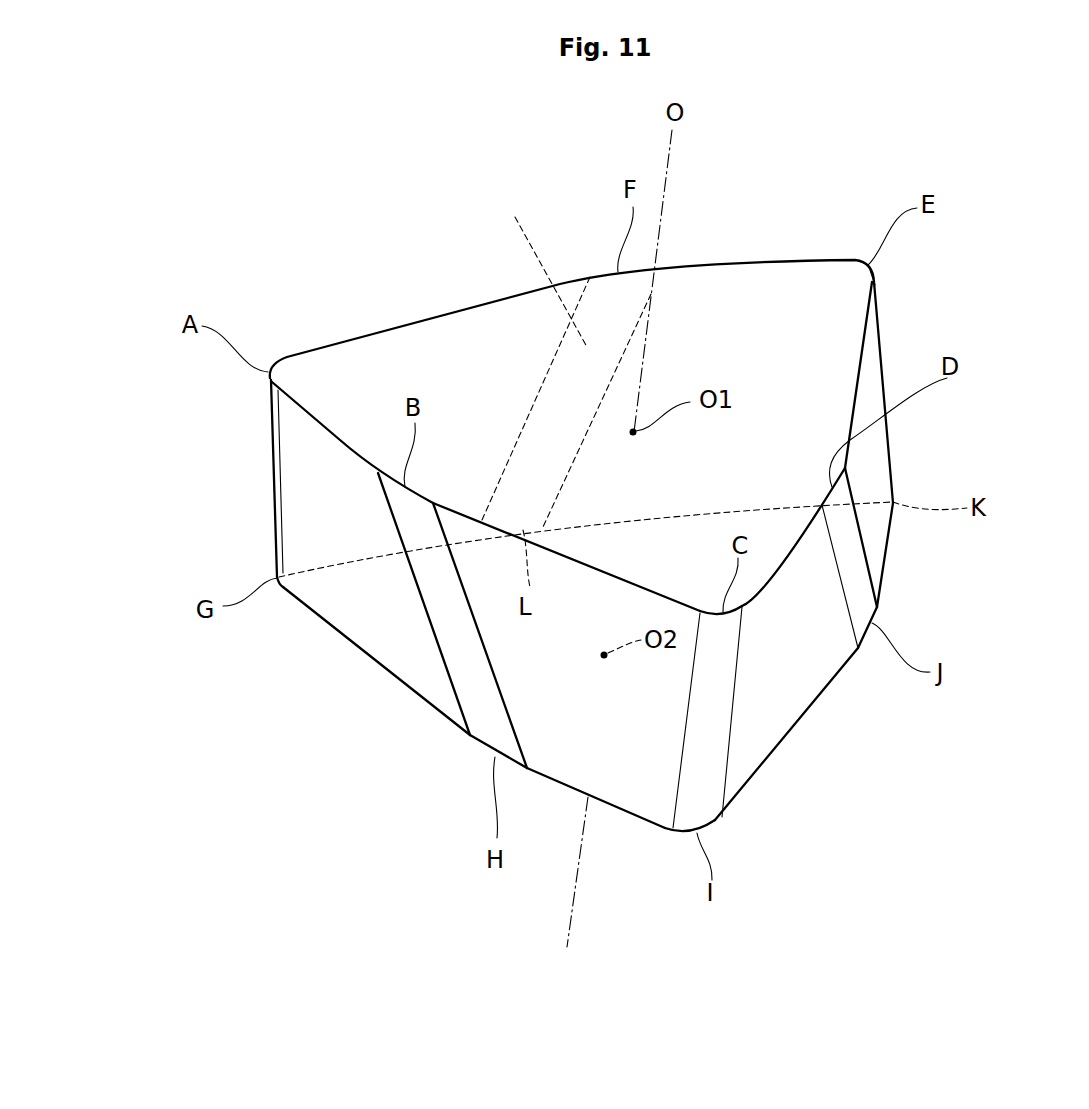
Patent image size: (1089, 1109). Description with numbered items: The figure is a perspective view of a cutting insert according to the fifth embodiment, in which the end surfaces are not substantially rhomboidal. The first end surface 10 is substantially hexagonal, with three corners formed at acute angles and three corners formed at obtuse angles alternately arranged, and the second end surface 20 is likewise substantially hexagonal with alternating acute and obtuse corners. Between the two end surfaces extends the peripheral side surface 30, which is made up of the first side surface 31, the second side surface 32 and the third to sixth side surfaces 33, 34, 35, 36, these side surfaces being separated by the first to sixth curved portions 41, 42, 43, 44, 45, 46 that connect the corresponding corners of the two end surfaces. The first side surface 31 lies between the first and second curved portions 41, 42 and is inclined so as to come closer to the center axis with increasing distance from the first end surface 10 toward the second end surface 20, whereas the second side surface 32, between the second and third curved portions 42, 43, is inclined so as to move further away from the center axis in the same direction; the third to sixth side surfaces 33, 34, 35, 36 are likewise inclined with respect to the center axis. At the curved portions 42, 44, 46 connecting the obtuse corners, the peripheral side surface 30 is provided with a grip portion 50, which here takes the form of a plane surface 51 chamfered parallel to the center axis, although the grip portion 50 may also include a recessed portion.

The first end surface 10 is at (803, 298).
The second end surface 20 is at (652, 753).
The peripheral side surface 30 is at (813, 655).
The first side surface 31 is at (362, 593).
The second side surface 32 is at (603, 700).
The third side surface 33 is at (782, 690).
The fourth side surface 34 is at (872, 465).
The fifth side surface 35 is at (745, 325).
The sixth side surface 36 is at (460, 365).
The first curved portion 41 is at (277, 480).
The second curved portion 42 is at (485, 720).
The third curved portion 43 is at (710, 753).
The fourth curved portion 44 is at (855, 583).
The fifth curved portion 45 is at (883, 350).
The sixth curved portion 46 is at (557, 433).
The grip portion 50 is at (670, 486).
The plane surface 51 is at (363, 773).